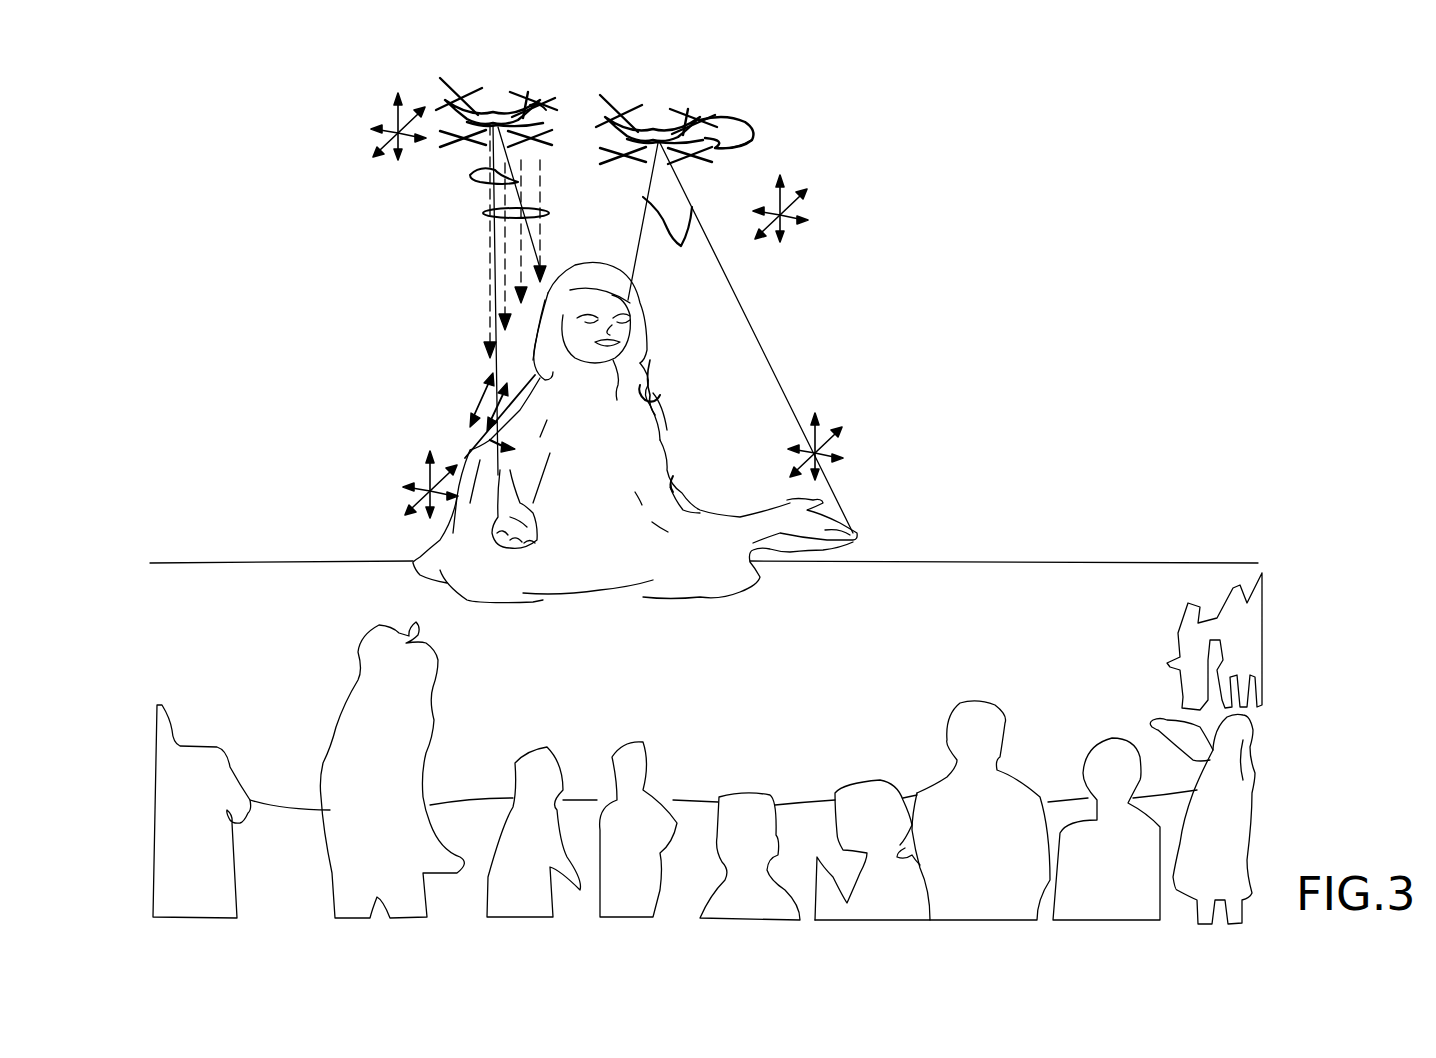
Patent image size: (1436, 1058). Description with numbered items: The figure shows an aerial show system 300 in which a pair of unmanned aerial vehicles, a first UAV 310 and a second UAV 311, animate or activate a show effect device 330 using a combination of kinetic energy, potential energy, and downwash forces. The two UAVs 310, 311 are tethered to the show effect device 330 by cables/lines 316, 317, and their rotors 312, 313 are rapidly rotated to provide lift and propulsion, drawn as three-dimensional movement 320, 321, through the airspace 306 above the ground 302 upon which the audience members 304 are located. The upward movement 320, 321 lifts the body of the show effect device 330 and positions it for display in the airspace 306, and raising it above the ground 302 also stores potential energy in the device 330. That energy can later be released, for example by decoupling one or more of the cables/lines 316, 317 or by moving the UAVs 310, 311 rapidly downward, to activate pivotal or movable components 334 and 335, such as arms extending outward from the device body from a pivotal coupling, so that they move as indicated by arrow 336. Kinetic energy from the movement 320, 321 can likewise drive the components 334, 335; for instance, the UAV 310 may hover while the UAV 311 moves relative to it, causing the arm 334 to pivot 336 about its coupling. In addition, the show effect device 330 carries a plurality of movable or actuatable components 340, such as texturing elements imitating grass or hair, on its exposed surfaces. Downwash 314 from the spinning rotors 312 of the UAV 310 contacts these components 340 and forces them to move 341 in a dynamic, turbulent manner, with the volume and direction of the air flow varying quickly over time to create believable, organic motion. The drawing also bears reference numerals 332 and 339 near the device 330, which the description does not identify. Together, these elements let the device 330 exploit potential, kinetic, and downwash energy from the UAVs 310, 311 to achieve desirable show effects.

The aerial show system 300 is at (900, 160).
The ground 302 is at (757, 767).
The audience members 304 is at (627, 753).
The airspace 306 is at (1097, 246).
The UAV 310 is at (504, 82).
The UAV 311 is at (710, 95).
The rotors 312 is at (540, 102).
The rotors 313 is at (752, 140).
The downwash 314 is at (546, 213).
The cable/line 316 is at (476, 180).
The cable/line 317 is at (740, 338).
The lift and propulsion (movement) 320 is at (386, 143).
The lift and propulsion (movement) 321 is at (784, 218).
The show effect device 330 is at (680, 408).
The arm joint 332 is at (607, 430).
The pivotal or movable component (arm) 334 is at (673, 480).
The pivotal or movable component (arm) 335 is at (487, 440).
The movement (pivot) of arm 336 is at (818, 456).
The foot movement directions 339 is at (425, 493).
The movable or actuatable components 340 is at (527, 377).
The movement of actuatable components 341 is at (495, 410).